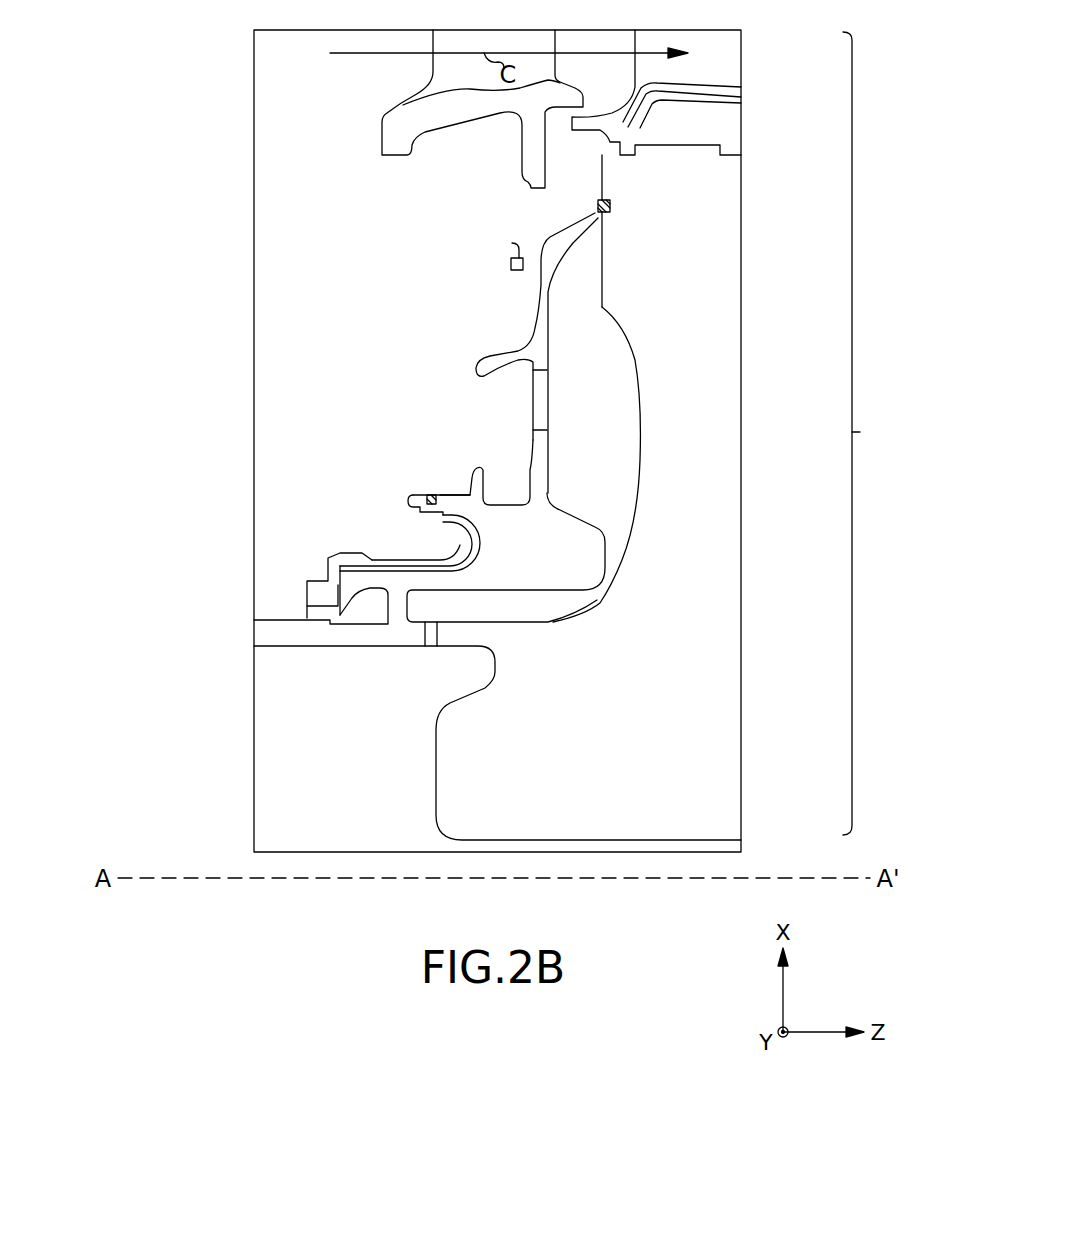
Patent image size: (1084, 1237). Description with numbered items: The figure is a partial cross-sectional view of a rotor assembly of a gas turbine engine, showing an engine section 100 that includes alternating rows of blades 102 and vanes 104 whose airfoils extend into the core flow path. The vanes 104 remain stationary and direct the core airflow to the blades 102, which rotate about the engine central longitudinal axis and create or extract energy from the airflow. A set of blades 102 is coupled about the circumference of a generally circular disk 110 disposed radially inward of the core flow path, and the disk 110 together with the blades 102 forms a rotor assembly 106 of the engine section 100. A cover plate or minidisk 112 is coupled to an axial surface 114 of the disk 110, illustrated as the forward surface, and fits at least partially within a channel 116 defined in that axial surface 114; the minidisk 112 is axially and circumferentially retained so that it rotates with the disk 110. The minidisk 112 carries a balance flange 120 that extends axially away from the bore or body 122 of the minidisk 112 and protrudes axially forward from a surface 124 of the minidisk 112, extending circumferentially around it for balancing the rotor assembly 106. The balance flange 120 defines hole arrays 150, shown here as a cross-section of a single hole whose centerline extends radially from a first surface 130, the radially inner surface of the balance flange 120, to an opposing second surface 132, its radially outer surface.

The engine section 100 is at (253, 57).
The blade 102 is at (715, 60).
The vane 104 is at (433, 80).
The rotor assembly 106 is at (873, 433).
The disk 110 is at (720, 560).
The minidisk 112 is at (437, 325).
The axial surface 114 is at (602, 285).
The channel 116 is at (640, 478).
The balance flange 120 is at (393, 531).
The body 122 is at (560, 520).
The surface 124 is at (533, 447).
The first surface 130 is at (428, 512).
The second surface 132 is at (458, 493).
The hole array 150 is at (428, 495).